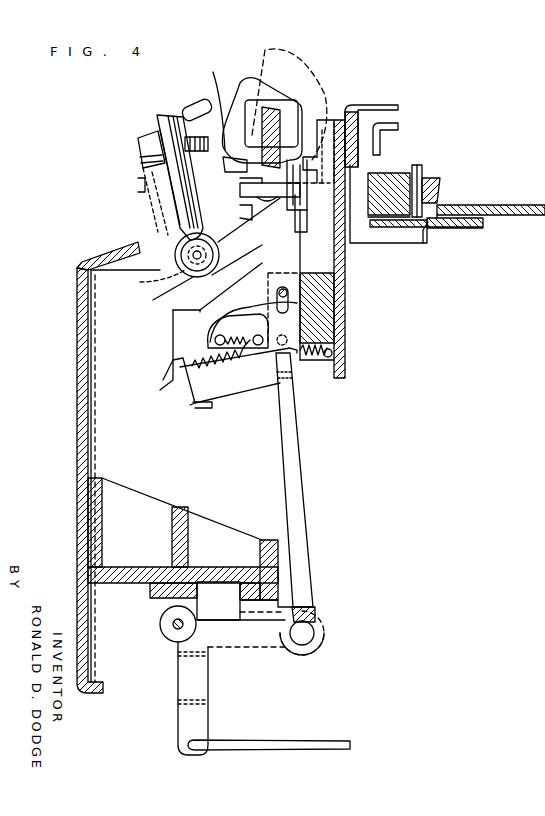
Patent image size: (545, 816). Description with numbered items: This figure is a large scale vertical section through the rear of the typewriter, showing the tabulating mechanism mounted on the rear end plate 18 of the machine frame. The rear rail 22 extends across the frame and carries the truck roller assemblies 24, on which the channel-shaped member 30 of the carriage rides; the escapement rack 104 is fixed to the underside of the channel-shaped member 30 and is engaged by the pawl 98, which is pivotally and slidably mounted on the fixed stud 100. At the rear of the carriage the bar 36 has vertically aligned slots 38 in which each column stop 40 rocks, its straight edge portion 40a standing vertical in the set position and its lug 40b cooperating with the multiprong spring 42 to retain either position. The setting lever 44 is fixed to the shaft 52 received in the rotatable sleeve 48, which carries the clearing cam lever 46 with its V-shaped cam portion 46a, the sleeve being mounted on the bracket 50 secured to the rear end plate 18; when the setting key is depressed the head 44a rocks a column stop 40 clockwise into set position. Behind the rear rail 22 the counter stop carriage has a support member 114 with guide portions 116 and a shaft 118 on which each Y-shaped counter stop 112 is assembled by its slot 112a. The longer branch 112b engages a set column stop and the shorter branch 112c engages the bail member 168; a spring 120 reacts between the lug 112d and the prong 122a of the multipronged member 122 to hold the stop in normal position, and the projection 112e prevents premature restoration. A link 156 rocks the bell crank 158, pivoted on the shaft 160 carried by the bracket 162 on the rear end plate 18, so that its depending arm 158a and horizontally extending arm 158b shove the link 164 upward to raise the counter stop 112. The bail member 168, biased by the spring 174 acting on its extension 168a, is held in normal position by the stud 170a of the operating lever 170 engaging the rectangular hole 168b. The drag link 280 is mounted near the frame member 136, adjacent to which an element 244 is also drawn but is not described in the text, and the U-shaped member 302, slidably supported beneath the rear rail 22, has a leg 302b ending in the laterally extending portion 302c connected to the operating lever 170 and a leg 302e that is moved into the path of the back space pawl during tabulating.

The rear end plate 18 is at (77, 475).
The rear rail 22 is at (395, 175).
The truck roller assembly 24 is at (437, 190).
The channel-shaped member 30 is at (505, 205).
The bar 36 is at (278, 125).
The slots 38 is at (300, 52).
The column stop 40 is at (250, 92).
The straight edge portion 40a is at (262, 115).
The lug 40b is at (206, 102).
The multiprong spring 42 is at (225, 165).
The setting lever 44 is at (158, 117).
The head 44a is at (185, 106).
The clearing cam lever 46 is at (148, 152).
The cam portion 46a is at (182, 128).
The rotatable sleeve 48 is at (175, 272).
The bracket 50 is at (108, 323).
The shaft 52 is at (150, 285).
The pawl 98 is at (398, 230).
The fixed stud 100 is at (380, 232).
The escapement rack 104 is at (483, 225).
The counter stop 112 is at (205, 296).
The slot 112a is at (215, 332).
The longer branch 112b is at (327, 125).
The shorter branch 112c is at (154, 292).
The lug 112d is at (268, 358).
The projection 112e is at (240, 210).
The support member 114 is at (345, 290).
The guide portions 116 is at (334, 312).
The shaft 118 is at (250, 295).
The spring 120 is at (212, 405).
The multipronged member 122 is at (225, 390).
The prong 122a is at (180, 385).
The frame member 136 is at (352, 173).
The link 156 is at (283, 742).
The bell crank 158 is at (170, 640).
The depending arm 158a is at (180, 683).
The horizontally extending arm 158b is at (258, 648).
The shaft 160 is at (172, 622).
The bracket 162 is at (222, 530).
The link 164 is at (300, 472).
The bail member 168 is at (250, 193).
The extension 168a is at (200, 352).
The rectangular hole 168b is at (245, 186).
The operating lever 170 is at (295, 200).
The stud 170a is at (310, 220).
The spring 174 is at (334, 340).
The stepped member 244 is at (320, 125).
The drag link 280 is at (358, 163).
The U-shaped member 302 is at (395, 250).
The leg 302b is at (249, 238).
The laterally extending portion 302c is at (175, 200).
The leg 302e is at (430, 240).